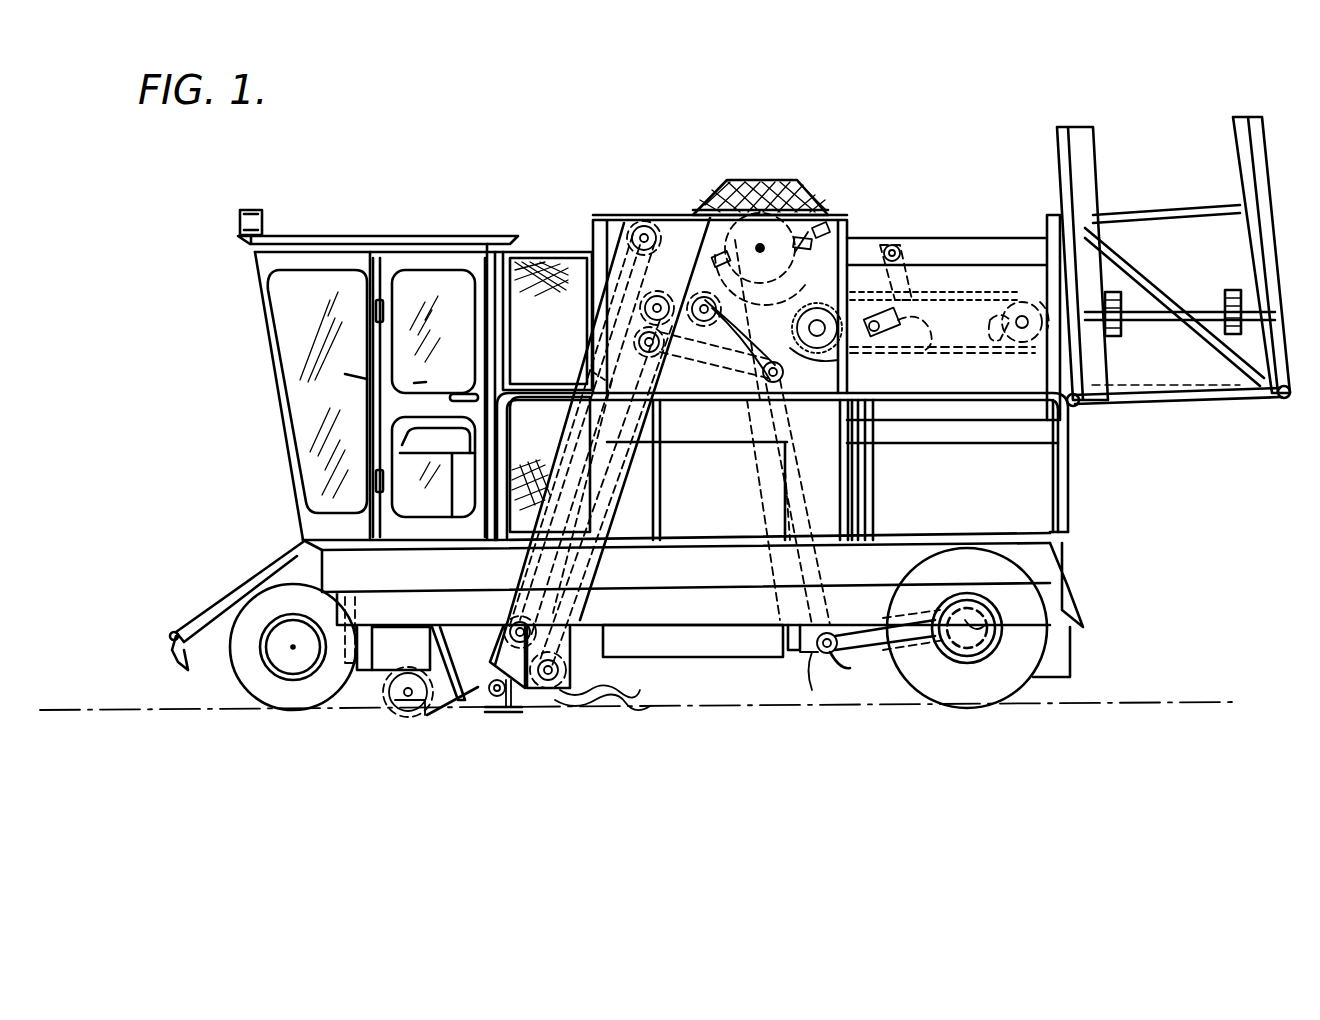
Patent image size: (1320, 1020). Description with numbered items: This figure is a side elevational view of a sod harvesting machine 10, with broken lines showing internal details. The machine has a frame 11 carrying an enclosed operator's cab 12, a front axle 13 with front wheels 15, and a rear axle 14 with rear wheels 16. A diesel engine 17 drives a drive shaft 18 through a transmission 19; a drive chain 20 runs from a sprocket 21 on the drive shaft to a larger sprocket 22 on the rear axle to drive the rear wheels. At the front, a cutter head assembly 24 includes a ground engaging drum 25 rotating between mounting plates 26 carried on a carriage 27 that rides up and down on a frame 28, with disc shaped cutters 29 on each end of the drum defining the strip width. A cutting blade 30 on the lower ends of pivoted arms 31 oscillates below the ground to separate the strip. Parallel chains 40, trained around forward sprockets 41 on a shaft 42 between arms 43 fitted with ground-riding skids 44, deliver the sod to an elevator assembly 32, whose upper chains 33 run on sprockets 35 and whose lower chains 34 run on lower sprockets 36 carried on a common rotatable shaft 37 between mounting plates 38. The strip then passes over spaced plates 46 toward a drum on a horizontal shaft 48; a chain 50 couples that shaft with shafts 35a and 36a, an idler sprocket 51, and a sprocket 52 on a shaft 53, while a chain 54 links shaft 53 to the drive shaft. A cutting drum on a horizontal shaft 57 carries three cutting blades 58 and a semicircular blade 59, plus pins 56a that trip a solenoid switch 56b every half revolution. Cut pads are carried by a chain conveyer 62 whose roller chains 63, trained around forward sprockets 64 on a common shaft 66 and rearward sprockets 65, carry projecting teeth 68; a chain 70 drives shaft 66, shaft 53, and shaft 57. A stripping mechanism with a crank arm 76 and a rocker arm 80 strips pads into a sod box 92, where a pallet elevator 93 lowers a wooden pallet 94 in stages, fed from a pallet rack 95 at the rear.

The sod harvesting machine 10 is at (292, 455).
The frame 11 is at (696, 613).
The operator's cab 12 is at (288, 323).
The front axle 13 is at (290, 630).
The rear axle 14 is at (1000, 640).
The front wheels 15 is at (248, 667).
The rear wheels 16 is at (1000, 690).
The diesel engine 17 is at (745, 520).
The drive shaft 18 is at (880, 625).
The transmission 19 is at (800, 660).
The drive chain 20 is at (868, 660).
The sprocket 21 is at (808, 690).
The larger sprocket 22 is at (975, 604).
The cutter head assembly 24 is at (378, 693).
The ground engaging drum 25 is at (410, 710).
The mounting plates 26 is at (372, 672).
The carriage 27 is at (370, 640).
The support member 28 is at (350, 598).
The disc shaped cutters 29 is at (422, 715).
The cutting blade 30 is at (440, 712).
The arms 31 is at (440, 620).
The elevator assembly 32 is at (572, 438).
The upper set of chains 33 is at (520, 568).
The lower set of chains 34 is at (548, 575).
The sprockets 35 is at (640, 228).
The shaft 35a is at (638, 238).
The lower sprockets 36 is at (572, 680).
The shaft 36a is at (660, 345).
The common rotatable shaft 37 is at (570, 620).
The mounting plates 38 is at (610, 692).
The parallel chains 40 is at (580, 706).
The forward sprockets 41 is at (498, 698).
The shaft 42 is at (515, 705).
The arms 43 is at (505, 672).
The skids 44 is at (490, 715).
The plates 46 is at (660, 295).
The horizontal shaft 48 is at (704, 296).
The chain 50 is at (722, 385).
The idler sprocket 51 is at (600, 375).
The sprocket 52 is at (795, 420).
The shaft 53 is at (768, 400).
The chain 54 is at (800, 482).
The pins 56a is at (715, 250).
The switch 56b is at (832, 230).
The horizontal shaft 57 is at (760, 245).
The cutting blades 58 is at (728, 178).
The semicircular blade 59 is at (805, 258).
The chain conveyer 62 is at (970, 276).
The roller chains 63 is at (915, 320).
The forward sprockets 64 is at (785, 385).
The rearward sprockets 65 is at (1022, 300).
The common shaft 66 is at (838, 360).
The teeth 68 is at (985, 340).
The chain 70 is at (760, 284).
The crank arm 76 is at (922, 352).
The rocker arm 80 is at (1000, 350).
The sod box 92 is at (1080, 433).
The pallet elevator 93 is at (1045, 505).
The wooden pallet 94 is at (968, 432).
The pallet rack 95 is at (1176, 205).